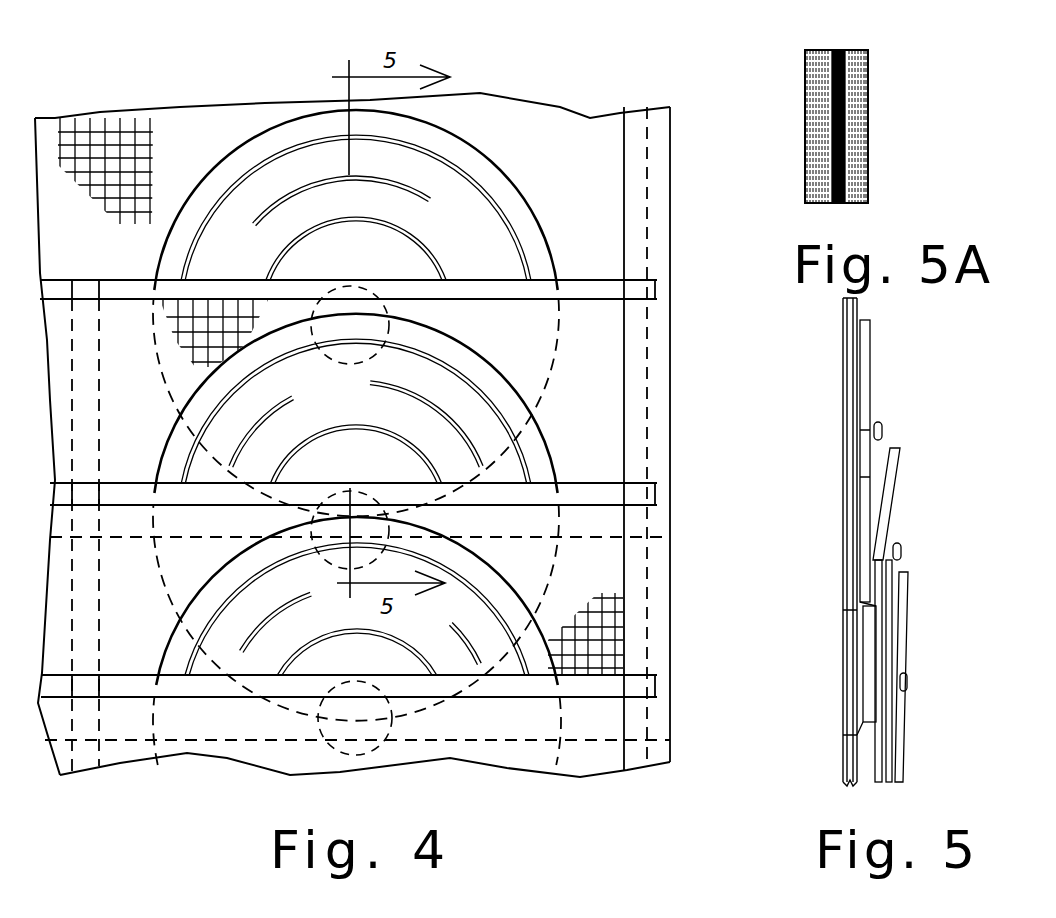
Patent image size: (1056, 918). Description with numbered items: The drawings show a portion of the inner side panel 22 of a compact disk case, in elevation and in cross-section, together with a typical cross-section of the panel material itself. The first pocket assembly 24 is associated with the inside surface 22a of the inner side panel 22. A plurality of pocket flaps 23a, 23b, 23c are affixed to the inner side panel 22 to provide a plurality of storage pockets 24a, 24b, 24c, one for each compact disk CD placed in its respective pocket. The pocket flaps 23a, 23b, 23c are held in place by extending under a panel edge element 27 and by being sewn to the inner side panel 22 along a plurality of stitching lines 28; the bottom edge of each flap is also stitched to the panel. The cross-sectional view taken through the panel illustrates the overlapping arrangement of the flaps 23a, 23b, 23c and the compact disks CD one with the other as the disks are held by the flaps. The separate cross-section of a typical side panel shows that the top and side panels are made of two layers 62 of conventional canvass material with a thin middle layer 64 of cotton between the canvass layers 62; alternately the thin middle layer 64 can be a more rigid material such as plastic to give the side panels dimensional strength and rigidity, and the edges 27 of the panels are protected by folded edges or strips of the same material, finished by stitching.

In FIG. 4, the inner side panel 22 is at (548, 135).
In FIG. 5, the inner side panel 22 is at (855, 308).
In FIG. 4, the inside surface 22a is at (212, 152).
In FIG. 4, the pocket flap 23a is at (605, 320).
In FIG. 5, the pocket flap 23a is at (879, 440).
In FIG. 4, the pocket flap 23b is at (607, 523).
In FIG. 5, the pocket flap 23b is at (902, 547).
In FIG. 4, the pocket flap 23c is at (607, 720).
In FIG. 5, the pocket flap 23c is at (903, 677).
In FIG. 4, the first pocket assembly 24 is at (580, 270).
In FIG. 5, the first pocket assembly 24 is at (890, 437).
In FIG. 4, the storage pocket 24a is at (508, 277).
In FIG. 5, the storage pocket 24a is at (873, 418).
In FIG. 4, the storage pocket 24b is at (500, 455).
In FIG. 5, the storage pocket 24b is at (895, 540).
In FIG. 4, the storage pocket 24c is at (522, 637).
In FIG. 4, the panel edge element 27 is at (665, 407).
In FIG. 4, the stitching lines 28 is at (100, 722).
In FIG. 4, the compact disk CD is at (533, 208).
In FIG. 5, the compact disk CD is at (867, 368).
In FIG. 5A, the canvass layers 62 is at (815, 102).
In FIG. 5A, the thin middle layer 64 is at (842, 155).